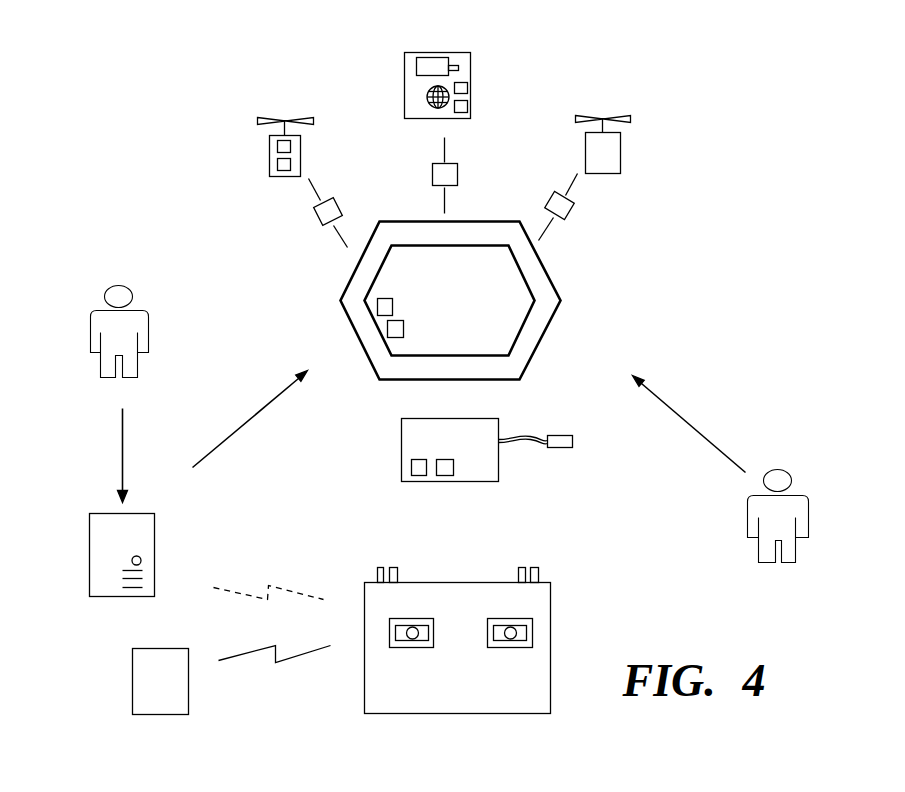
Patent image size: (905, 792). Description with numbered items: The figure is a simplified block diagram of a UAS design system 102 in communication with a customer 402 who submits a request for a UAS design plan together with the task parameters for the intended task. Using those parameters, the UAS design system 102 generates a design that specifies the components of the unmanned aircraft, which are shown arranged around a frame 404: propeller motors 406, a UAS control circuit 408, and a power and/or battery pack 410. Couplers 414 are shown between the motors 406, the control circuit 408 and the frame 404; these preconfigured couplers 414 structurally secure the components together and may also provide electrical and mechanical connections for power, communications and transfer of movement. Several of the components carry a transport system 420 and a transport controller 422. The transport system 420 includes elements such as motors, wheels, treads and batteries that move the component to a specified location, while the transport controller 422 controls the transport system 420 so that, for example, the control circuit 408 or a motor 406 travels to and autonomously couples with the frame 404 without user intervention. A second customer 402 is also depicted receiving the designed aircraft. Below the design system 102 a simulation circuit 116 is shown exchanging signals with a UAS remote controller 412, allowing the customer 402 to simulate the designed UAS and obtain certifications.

The UAS design system 102 is at (89, 545).
The simulation circuit 116 is at (132, 685).
The customer 402 is at (92, 340).
The frame 404 is at (548, 320).
The propeller motors 406 is at (269, 165).
The UAS control circuit 408 is at (406, 70).
The power and/or battery pack 410 is at (401, 450).
The UAS remote controller 412 is at (550, 613).
The couplers 414 is at (457, 175).
The transport system 420 is at (467, 87).
The transport controller 422 is at (467, 107).